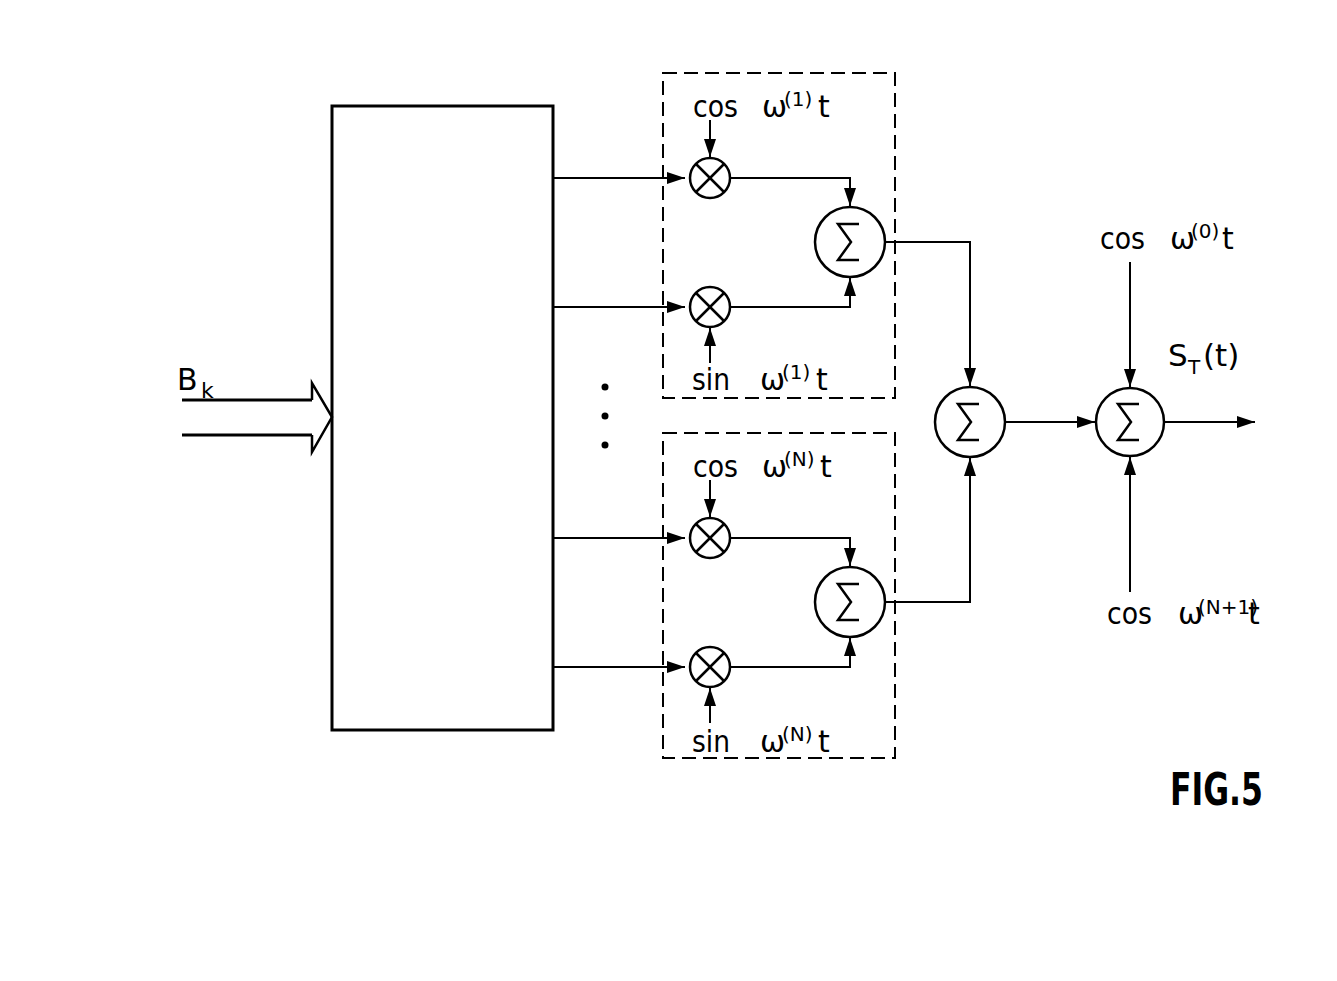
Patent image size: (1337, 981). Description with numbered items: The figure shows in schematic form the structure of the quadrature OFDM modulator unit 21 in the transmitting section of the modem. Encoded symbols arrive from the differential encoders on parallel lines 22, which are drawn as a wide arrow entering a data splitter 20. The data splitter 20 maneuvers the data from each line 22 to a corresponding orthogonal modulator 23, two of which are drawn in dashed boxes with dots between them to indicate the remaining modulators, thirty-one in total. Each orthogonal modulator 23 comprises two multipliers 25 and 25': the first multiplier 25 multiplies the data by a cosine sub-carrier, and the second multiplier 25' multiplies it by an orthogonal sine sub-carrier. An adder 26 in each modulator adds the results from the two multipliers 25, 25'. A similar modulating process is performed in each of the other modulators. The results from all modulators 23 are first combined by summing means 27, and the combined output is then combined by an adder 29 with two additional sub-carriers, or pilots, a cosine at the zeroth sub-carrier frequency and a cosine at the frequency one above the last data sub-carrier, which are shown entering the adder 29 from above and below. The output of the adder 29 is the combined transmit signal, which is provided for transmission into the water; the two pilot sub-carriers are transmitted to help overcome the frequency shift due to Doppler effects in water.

The data splitter 20 is at (385, 106).
The parallel lines 22 is at (255, 400).
The quadrature OFDM modulator unit 21 is at (688, 73).
The orthogonal modulator 23 is at (830, 80).
The first multiplier 25 is at (730, 378).
The second multiplier 25' is at (732, 469).
The adder 26 is at (880, 215).
The summing means 27 is at (1000, 400).
The adder 29 is at (1160, 445).